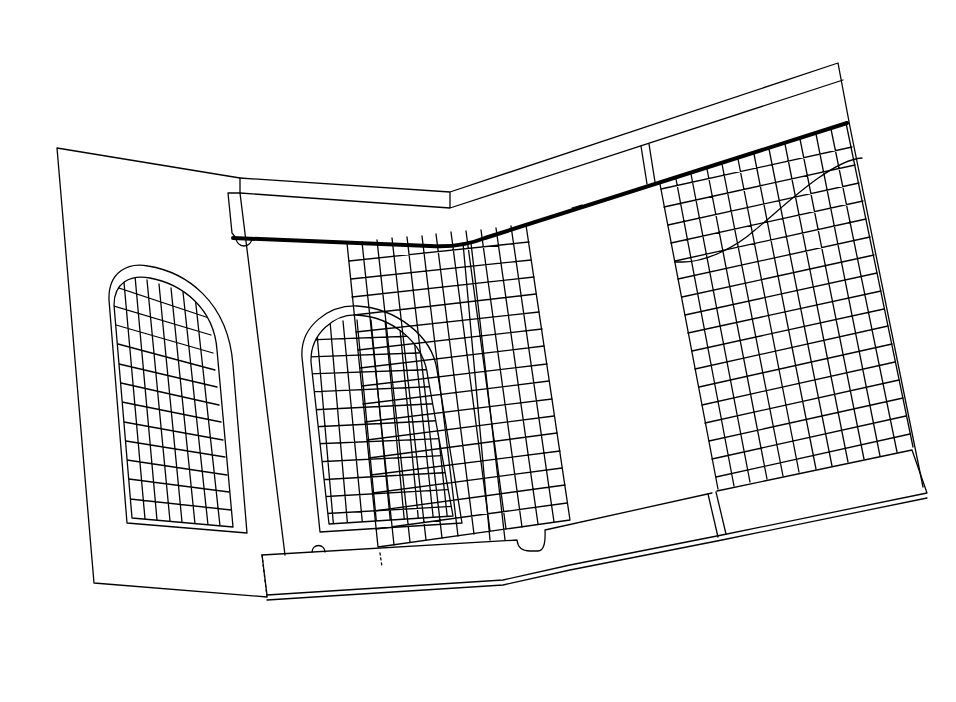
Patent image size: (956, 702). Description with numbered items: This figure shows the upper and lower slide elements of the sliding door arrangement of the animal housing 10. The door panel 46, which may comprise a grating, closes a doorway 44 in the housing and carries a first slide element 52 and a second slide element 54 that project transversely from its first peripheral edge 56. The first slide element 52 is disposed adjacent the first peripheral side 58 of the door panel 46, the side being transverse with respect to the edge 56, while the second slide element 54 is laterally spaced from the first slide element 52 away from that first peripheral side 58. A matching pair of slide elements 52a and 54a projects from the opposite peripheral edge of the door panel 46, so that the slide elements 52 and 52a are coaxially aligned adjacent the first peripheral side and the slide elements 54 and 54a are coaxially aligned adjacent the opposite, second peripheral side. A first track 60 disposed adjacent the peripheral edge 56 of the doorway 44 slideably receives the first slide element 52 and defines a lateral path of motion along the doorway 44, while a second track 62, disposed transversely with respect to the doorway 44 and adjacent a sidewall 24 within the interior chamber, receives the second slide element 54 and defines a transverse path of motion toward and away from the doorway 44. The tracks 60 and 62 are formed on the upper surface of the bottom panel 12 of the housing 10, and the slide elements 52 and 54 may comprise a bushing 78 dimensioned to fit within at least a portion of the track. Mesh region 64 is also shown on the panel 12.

The animal housing 10 is at (717, 67).
The bottom panel 12 is at (853, 490).
The sidewall 24 is at (93, 152).
The doorway 44 is at (740, 494).
The door panel 46 is at (786, 326).
The first slide element 52 is at (641, 196).
The first pair slide element 52a is at (345, 240).
The second slide element 54 is at (767, 475).
The second pair slide element 54a is at (305, 560).
The first peripheral edge 56 is at (577, 217).
The first peripheral side 58 is at (862, 158).
The first track 60 is at (242, 226).
The second track 62 is at (280, 263).
The door mesh panel 64 is at (545, 423).
The bushing 78 is at (659, 184).